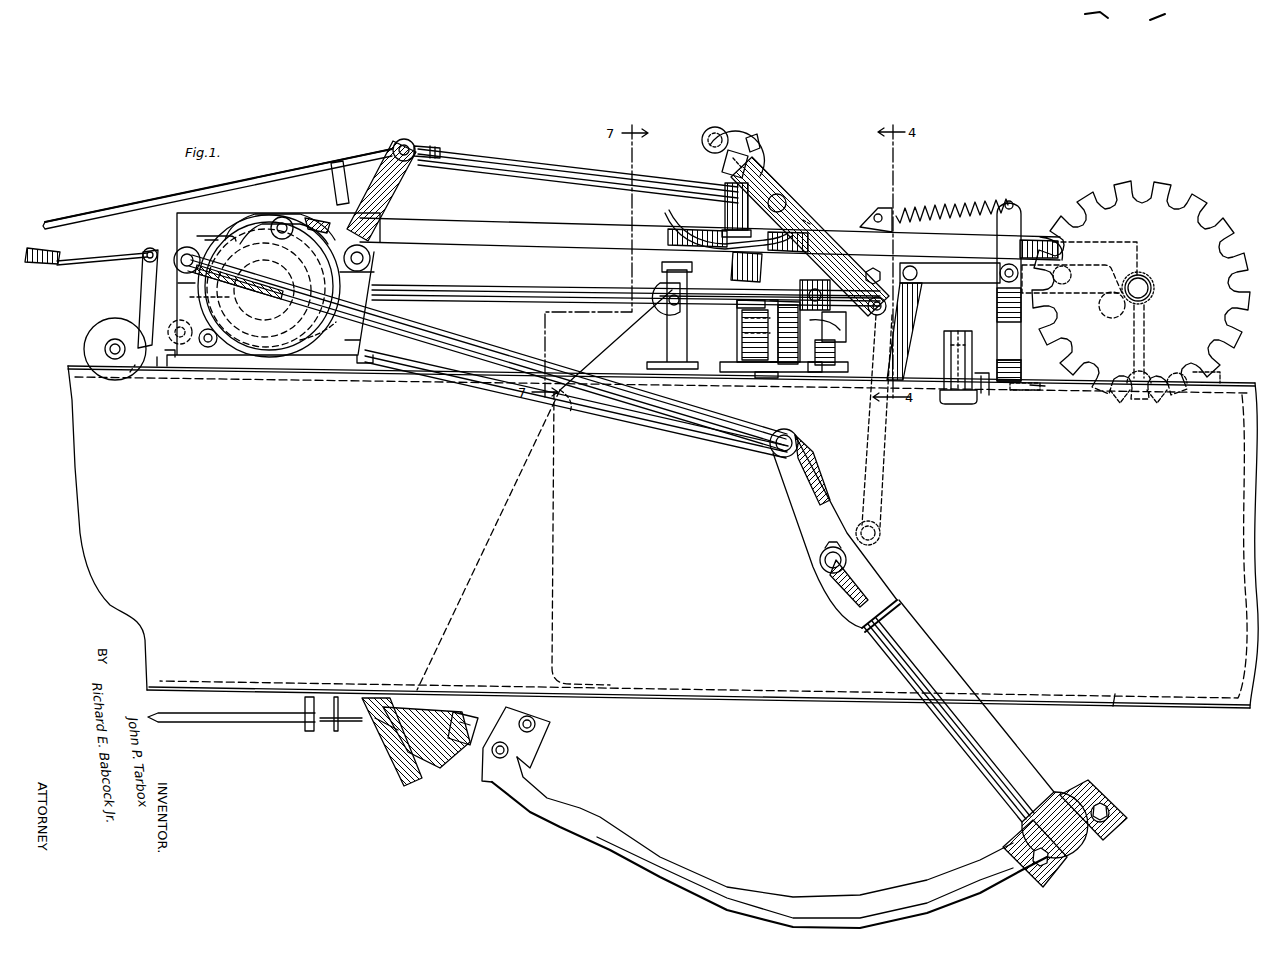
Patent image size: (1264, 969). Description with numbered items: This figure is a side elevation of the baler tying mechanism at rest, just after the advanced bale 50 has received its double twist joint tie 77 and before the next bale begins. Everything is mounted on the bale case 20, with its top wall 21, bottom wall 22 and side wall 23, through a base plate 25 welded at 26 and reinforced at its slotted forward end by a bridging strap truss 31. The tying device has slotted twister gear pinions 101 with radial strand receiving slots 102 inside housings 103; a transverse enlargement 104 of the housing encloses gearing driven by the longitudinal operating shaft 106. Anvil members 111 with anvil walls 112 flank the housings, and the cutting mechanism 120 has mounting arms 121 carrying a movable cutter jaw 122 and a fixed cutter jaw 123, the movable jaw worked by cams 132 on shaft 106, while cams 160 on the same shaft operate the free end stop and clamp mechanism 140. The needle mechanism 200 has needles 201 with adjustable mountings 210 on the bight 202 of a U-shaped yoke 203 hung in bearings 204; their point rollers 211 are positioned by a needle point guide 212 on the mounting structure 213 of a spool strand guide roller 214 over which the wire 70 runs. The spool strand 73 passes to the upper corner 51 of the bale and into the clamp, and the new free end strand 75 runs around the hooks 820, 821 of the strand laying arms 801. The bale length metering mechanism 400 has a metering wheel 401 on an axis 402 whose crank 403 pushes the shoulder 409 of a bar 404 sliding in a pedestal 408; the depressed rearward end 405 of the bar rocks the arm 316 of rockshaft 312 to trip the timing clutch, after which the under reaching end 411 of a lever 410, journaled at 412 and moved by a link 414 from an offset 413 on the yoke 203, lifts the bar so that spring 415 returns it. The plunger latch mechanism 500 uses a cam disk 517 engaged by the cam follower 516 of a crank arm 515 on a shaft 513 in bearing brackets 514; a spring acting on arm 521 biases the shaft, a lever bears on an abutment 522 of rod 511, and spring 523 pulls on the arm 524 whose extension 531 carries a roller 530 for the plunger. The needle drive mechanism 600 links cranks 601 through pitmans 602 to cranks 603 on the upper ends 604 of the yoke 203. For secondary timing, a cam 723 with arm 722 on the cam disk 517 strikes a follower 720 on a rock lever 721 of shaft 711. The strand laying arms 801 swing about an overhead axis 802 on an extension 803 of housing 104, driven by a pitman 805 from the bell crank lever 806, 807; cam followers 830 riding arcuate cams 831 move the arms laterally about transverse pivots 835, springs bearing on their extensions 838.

The bale case 20 is at (1065, 540).
The top wall 21 is at (1037, 392).
The bottom wall 22 is at (290, 690).
The side wall 23 is at (1115, 704).
The base plate 25 is at (426, 380).
The weld 26 is at (158, 372).
The bridging strap truss 31 is at (957, 340).
The advanced bale 50 is at (560, 545).
The upper corner of the advance bale 51 is at (568, 398).
The wire 70 is at (338, 694).
The spool strand 73 is at (612, 350).
The free end strand 75 is at (790, 290).
The double twist joint tie 77 is at (766, 378).
The twister gear pinion 101 is at (745, 333).
The radial strand receiving slot 102 is at (748, 374).
The twister gear housing 103 is at (783, 366).
The main gear housing extension 104 is at (745, 276).
The operating shaft 106 is at (528, 288).
The anvil member 111 is at (750, 312).
The anvil wall 112 is at (740, 350).
The cutting mechanism 120 is at (846, 338).
The mounting arm 121 is at (834, 370).
The movable cutter jaw 122 is at (838, 352).
The fixed cutter jaw 123 is at (835, 330).
The cam 132 is at (815, 283).
The free end stop and clamp mechanism 140 is at (668, 316).
The cam 160 is at (669, 280).
The needle mechanism 200 is at (1055, 811).
The needle 201 is at (766, 894).
The bight of the yoke 202 is at (1068, 862).
The U-shaped yoke 203 is at (962, 681).
The bearing 204 is at (818, 563).
The adjustable mounting 210 is at (1108, 797).
The point roller 211 is at (513, 750).
The needle point guide 212 is at (450, 760).
The mounting structure 213 is at (398, 758).
The spool strand guide roller 214 is at (386, 726).
The rockshaft 312 is at (185, 345).
The upward extending arm 316 is at (178, 283).
The bale length metering mechanism 400 is at (911, 222).
The metering wheel 401 is at (1115, 191).
The metering wheel shaft 402 is at (1153, 293).
The crank 403 is at (1106, 302).
The bar 404 is at (233, 228).
The depressed rearward end 405 is at (178, 231).
The pedestal 408 is at (1021, 366).
The shoulder 409 is at (1145, 266).
The lever 410 is at (943, 277).
The under reaching end 411 is at (1071, 276).
The journal 412 is at (1002, 280).
The offset 413 is at (878, 548).
The link connection 414 is at (897, 440).
The spring 415 is at (945, 210).
The plunger latch mechanism 500 is at (148, 326).
The rod 511 is at (108, 213).
The shaft 513 is at (372, 258).
The bearing bracket 514 is at (368, 278).
The crank arm 515 is at (310, 205).
The cam follower 516 is at (272, 222).
The cam disk 517 is at (193, 247).
The arm 521 is at (270, 222).
The abutment 522 is at (333, 170).
The spring 523 is at (50, 270).
The fixed arm 524 is at (147, 270).
The roller 530 is at (98, 331).
The bell crank rearward extension 531 is at (134, 375).
The needle drive mechanism 600 is at (478, 342).
The crank 601 is at (215, 237).
The rod 602 is at (487, 372).
The crank 603 is at (790, 495).
The upper end of the yoke 604 is at (860, 629).
The shaft 711 is at (213, 350).
The follower 720 is at (190, 297).
The rock lever 721 is at (246, 336).
The cam arm 722 is at (248, 326).
The cam 723 is at (318, 338).
The strand laying arm 801 is at (780, 190).
The overhead axis 802 is at (755, 158).
The extension 803 is at (724, 188).
The pitman 805 is at (528, 167).
The bell crank arm 806 is at (380, 192).
The bell crank lever 807 is at (305, 273).
The hook 820 is at (868, 271).
The hook 821 is at (877, 296).
The cam follower 830 is at (805, 219).
The arcuate cam 831 is at (681, 232).
The transverse pivot 835 is at (754, 143).
The extension of arm 838 is at (702, 140).